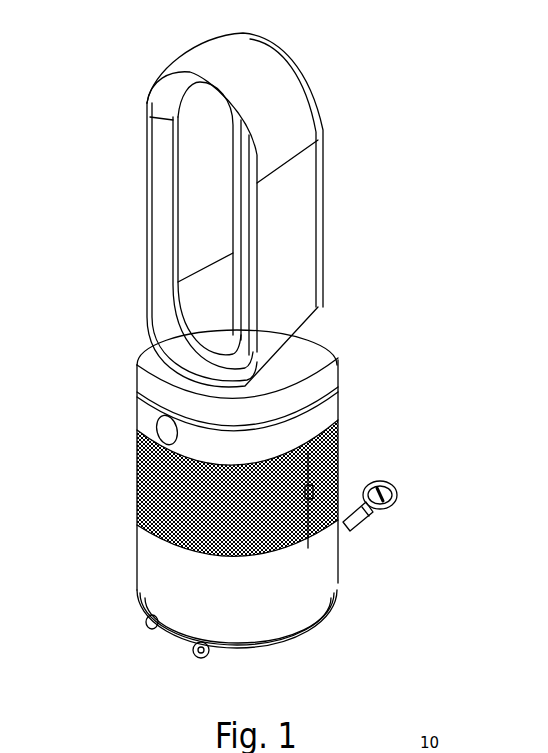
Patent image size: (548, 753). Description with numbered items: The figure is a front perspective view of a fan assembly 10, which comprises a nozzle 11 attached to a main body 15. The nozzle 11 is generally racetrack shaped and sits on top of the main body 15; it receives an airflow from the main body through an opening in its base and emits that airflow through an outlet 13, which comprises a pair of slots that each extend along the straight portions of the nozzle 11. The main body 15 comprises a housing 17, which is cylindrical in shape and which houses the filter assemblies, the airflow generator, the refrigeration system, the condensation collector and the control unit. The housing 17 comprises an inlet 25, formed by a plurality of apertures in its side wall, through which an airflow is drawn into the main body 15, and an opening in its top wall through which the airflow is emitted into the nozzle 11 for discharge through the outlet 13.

The fan assembly 10 is at (404, 78).
The nozzle 11 is at (124, 183).
The outlet 13 is at (153, 242).
The main body 15 is at (123, 389).
The inlet 25 is at (153, 483).
The housing 17 is at (153, 577).